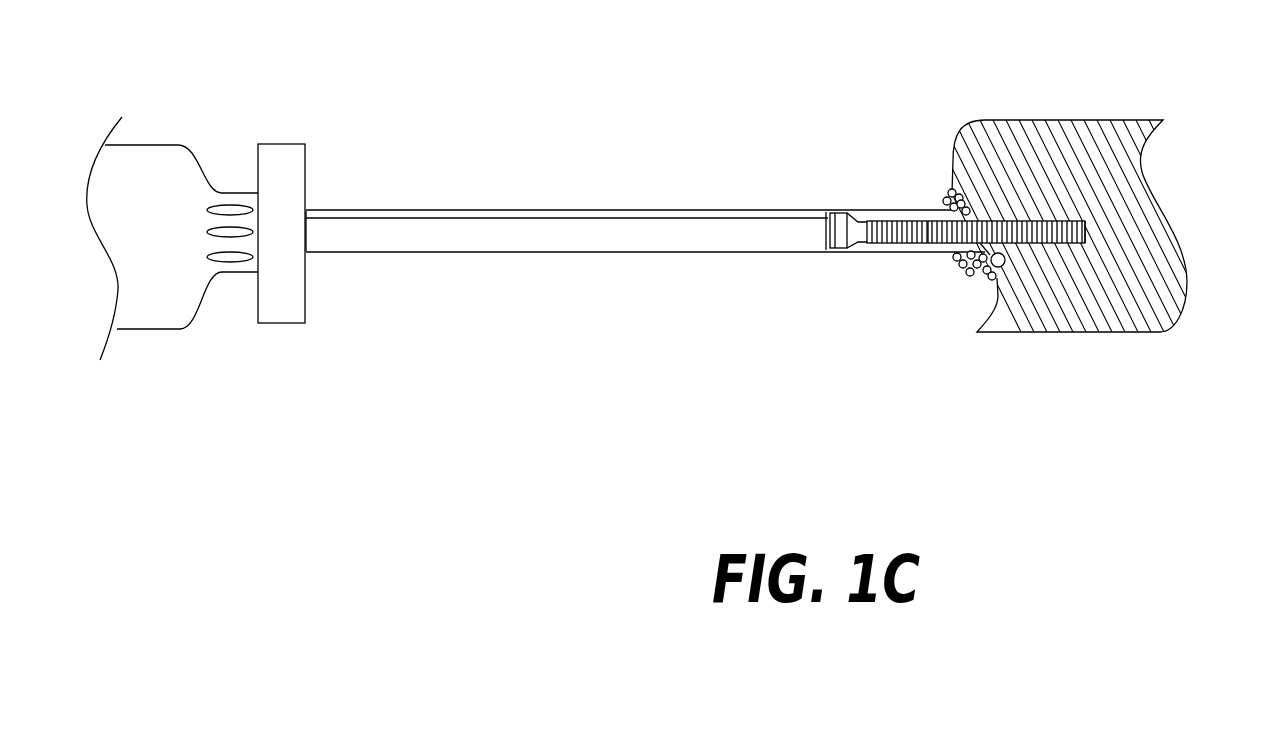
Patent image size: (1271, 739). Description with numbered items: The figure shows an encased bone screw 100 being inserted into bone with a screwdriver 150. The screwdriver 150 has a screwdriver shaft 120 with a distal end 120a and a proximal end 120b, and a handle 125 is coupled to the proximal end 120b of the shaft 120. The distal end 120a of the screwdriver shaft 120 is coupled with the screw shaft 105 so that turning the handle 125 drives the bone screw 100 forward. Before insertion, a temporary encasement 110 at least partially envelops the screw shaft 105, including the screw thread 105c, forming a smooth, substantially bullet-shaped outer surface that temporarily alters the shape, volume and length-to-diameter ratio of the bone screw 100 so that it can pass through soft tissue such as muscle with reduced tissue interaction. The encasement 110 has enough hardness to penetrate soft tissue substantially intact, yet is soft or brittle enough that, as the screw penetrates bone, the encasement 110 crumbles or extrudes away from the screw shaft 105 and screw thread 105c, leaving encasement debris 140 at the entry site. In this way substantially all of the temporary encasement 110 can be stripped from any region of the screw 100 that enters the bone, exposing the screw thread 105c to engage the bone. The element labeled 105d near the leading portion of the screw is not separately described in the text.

The bone screw 100 is at (890, 162).
The screw shaft 105 is at (878, 218).
The screw thread 105c is at (933, 212).
The distal end of anchor 105d is at (1063, 222).
The temporary encasement 110 is at (848, 250).
The screwdriver shaft 120 is at (597, 238).
The distal end of screwdriver shaft 120a is at (827, 233).
The proximal end of screwdriver shaft 120b is at (306, 211).
The handle 125 is at (267, 144).
The encasement debris 140 is at (983, 278).
The screwdriver 150 is at (1115, 137).